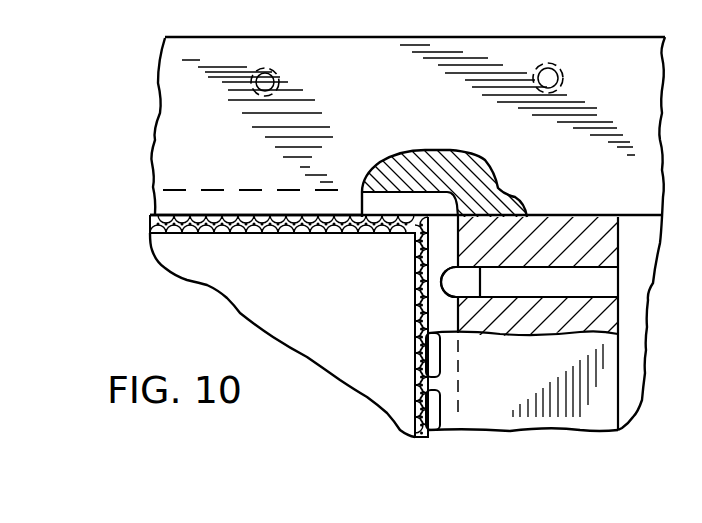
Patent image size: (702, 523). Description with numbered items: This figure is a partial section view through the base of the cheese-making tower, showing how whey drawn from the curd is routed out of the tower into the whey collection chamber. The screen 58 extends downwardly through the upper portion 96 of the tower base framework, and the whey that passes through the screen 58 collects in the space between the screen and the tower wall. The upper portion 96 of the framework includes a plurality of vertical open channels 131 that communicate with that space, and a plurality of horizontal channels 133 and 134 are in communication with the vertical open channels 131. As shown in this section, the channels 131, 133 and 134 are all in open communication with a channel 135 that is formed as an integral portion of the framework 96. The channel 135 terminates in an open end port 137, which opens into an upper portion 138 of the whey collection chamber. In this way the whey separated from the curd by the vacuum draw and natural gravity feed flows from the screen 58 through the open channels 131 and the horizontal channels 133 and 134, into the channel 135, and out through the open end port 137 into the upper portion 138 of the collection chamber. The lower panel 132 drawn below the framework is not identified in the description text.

The upper portion of the framework 96 is at (650, 87).
The open channels 131 is at (282, 214).
The lower skin 132 is at (247, 305).
The horizontal channel 133 is at (437, 200).
The horizontal channel 134 is at (450, 284).
The channel 135 is at (608, 277).
The open end port 137 is at (620, 296).
The upper portion of the whey collection chamber 138 is at (628, 352).
The screen 58 is at (417, 334).